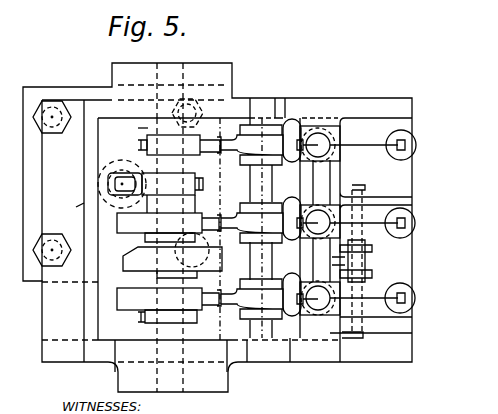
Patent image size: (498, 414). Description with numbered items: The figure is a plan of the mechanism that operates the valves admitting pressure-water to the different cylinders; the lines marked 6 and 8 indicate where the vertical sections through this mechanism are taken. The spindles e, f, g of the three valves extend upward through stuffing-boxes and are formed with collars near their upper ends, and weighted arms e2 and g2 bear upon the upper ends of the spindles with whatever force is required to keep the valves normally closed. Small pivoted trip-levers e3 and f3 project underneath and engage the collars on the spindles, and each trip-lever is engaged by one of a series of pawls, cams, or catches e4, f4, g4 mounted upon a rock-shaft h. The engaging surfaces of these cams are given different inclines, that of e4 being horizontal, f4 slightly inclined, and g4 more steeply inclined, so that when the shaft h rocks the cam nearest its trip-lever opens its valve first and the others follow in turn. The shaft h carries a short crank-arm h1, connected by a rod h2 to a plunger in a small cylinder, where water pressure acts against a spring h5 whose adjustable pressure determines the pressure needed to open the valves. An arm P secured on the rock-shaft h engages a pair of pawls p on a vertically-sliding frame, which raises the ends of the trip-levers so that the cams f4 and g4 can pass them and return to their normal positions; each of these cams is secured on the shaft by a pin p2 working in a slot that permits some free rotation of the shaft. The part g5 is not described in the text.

The section line 8 8 is at (290, 392).
The section line 6 6 is at (466, 298).
The rock-shaft h is at (200, 328).
The short crank-arm h1 is at (172, 193).
The rod h2 is at (108, 183).
The spring h5 is at (71, 208).
The valve-spindle e is at (318, 157).
The weighted arm e2 is at (378, 147).
The pivoted trip-lever e3 is at (262, 150).
The pawl, cam, or catch e4 is at (208, 153).
The valve-spindle f is at (313, 238).
The pivoted trip-lever f3 is at (269, 220).
The pawl, cam, or catch f4 is at (169, 227).
The valve-spindle g is at (320, 311).
The weighted arm g2 is at (332, 335).
The pawl, cam, or catch g4 is at (169, 305).
The spool coupling g5 is at (269, 296).
The arm P is at (127, 262).
The pawl or catch p is at (372, 266).
The pin p2 is at (392, 236).